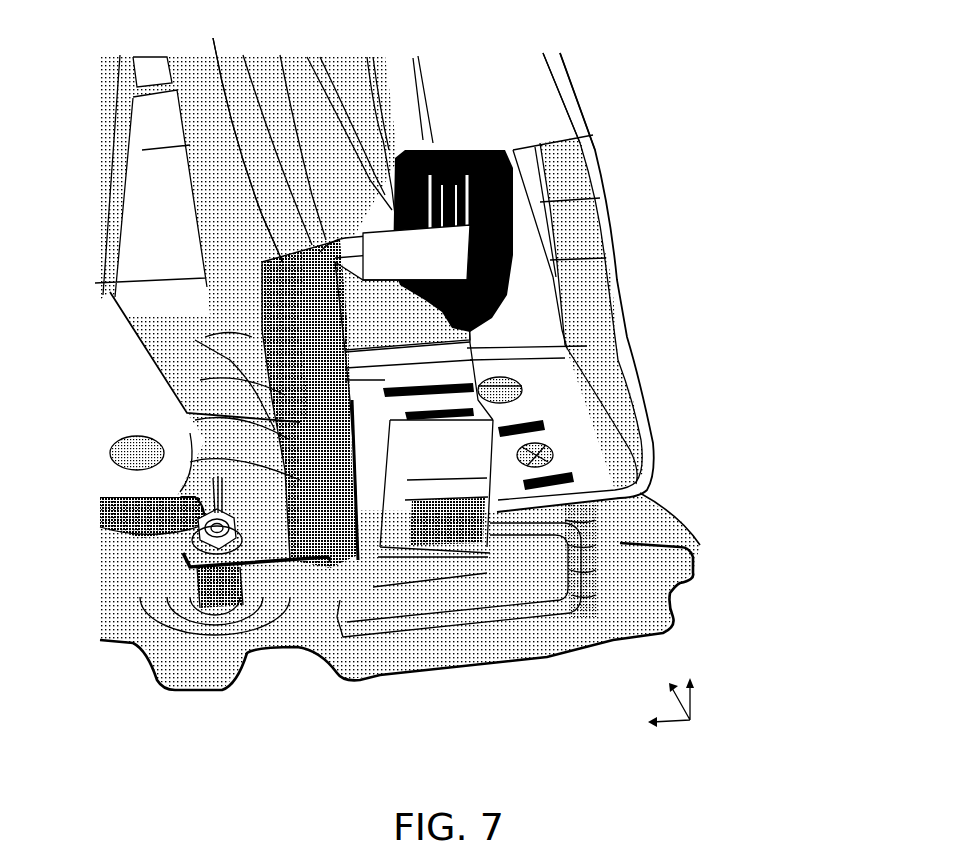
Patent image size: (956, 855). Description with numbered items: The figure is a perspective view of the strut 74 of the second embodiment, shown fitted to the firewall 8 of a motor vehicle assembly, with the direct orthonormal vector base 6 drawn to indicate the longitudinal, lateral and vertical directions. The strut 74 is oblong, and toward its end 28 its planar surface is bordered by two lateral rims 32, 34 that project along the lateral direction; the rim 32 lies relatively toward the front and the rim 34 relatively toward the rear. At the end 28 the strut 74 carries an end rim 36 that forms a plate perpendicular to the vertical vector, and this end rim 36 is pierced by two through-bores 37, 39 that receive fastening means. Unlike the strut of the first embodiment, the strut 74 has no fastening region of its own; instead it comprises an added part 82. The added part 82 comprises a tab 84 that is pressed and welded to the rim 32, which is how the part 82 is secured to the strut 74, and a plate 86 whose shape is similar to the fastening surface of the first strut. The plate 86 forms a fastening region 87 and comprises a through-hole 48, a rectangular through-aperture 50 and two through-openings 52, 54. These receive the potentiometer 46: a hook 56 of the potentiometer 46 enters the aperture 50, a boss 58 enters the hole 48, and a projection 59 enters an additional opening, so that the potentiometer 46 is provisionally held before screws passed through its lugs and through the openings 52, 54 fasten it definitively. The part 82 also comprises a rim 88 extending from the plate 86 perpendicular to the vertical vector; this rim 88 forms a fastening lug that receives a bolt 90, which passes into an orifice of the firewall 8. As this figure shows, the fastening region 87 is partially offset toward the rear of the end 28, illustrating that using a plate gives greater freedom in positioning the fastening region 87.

The direct orthonormal vector base 6 is at (648, 737).
The firewall 8 is at (320, 647).
The end 28 is at (563, 380).
The lateral rim 32 is at (391, 64).
The lateral rim 34 is at (487, 64).
The end rim 36 is at (577, 453).
The through-bore 37 is at (520, 387).
The through-bore 39 is at (553, 457).
The potentiometer 46 is at (378, 325).
The through-hole 48 is at (365, 620).
The rectangular through-aperture 50 is at (197, 433).
The through-opening 52 is at (268, 265).
The through-opening 54 is at (400, 550).
The hook 56 is at (252, 337).
The boss 58 is at (288, 572).
The projection 59 is at (343, 607).
The strut 74 is at (596, 137).
The added part 82 is at (395, 215).
The tab 84 is at (414, 62).
The plate 86 is at (233, 137).
The fastening region 87 is at (215, 48).
The rim 88 is at (300, 585).
The bolt 90 is at (235, 525).